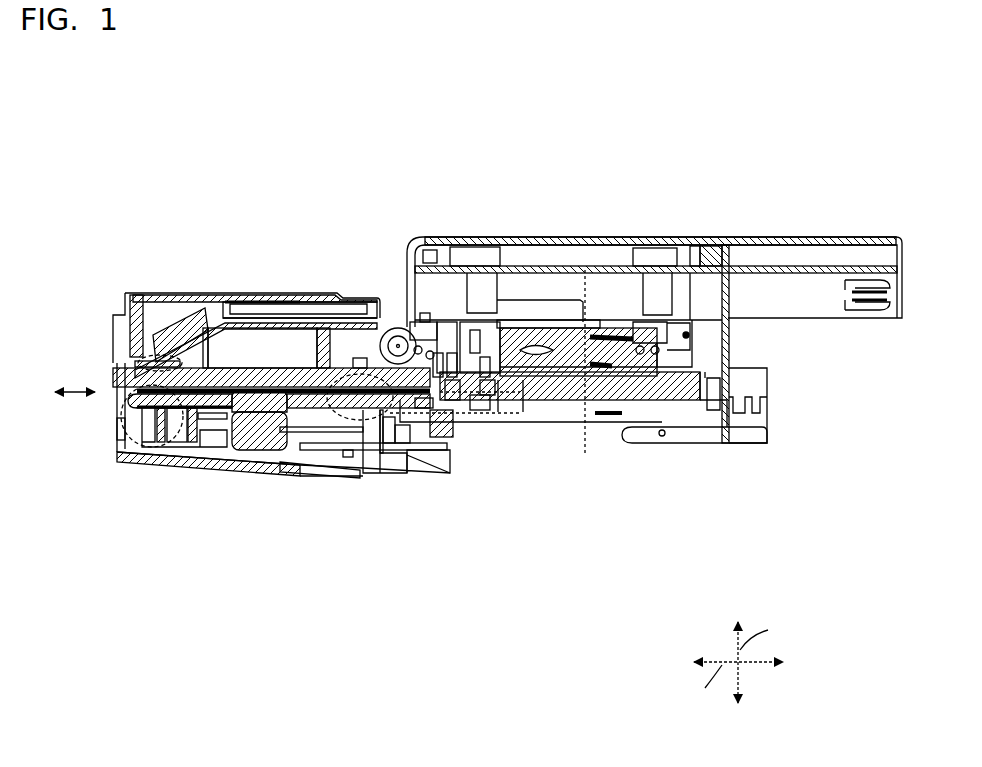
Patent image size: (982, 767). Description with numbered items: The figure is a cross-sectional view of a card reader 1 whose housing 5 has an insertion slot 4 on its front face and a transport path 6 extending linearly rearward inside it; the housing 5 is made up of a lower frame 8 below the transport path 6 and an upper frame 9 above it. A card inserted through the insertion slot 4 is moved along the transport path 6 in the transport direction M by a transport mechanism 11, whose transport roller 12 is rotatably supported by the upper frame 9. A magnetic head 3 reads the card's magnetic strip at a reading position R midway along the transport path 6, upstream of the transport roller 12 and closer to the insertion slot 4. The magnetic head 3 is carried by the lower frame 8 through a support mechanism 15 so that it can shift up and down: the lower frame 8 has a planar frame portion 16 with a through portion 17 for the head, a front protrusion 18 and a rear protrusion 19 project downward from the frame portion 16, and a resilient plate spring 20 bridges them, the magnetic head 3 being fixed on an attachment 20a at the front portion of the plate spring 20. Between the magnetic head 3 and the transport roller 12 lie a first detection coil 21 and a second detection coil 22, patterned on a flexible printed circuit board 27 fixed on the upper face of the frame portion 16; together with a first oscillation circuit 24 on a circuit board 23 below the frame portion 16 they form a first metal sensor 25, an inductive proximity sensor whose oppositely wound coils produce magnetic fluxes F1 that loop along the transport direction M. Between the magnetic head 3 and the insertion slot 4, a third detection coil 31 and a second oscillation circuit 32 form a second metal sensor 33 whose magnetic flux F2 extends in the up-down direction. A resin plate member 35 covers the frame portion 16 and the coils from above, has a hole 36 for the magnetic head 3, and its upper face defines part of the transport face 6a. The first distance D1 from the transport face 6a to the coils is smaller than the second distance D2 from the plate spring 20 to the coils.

The card reader 1 is at (733, 175).
The magnetic head 3 is at (236, 458).
The insertion slot 4 is at (121, 388).
The housing 5 is at (565, 236).
The transport path 6 is at (111, 392).
The transport face 6a is at (427, 402).
The lower frame 8 is at (578, 402).
The upper frame 9 is at (588, 237).
The transport mechanism 11 is at (422, 330).
The transport roller 12 is at (398, 346).
The support mechanism 15 is at (303, 433).
The frame portion 16 is at (423, 407).
The through portion 17 is at (255, 412).
The front protrusion 18 is at (185, 427).
The rear protrusion 19 is at (397, 410).
The plate spring 20 is at (325, 470).
The attachment 20a is at (300, 430).
The first detection coil 21 is at (312, 385).
The second detection coil 22 is at (378, 378).
The circuit board 23 is at (343, 440).
The first oscillation circuit 24 is at (370, 450).
The first metal sensor 25 is at (317, 376).
The flexible printed circuit board 27 is at (292, 377).
The third detection coil 31 is at (185, 365).
The second oscillation circuit 32 is at (386, 425).
The second metal sensor 33 is at (121, 427).
The plate member 35 is at (200, 345).
The hole 36 is at (225, 375).
The reading position R is at (256, 375).
The magnetic fluxes F1 is at (345, 372).
The magnetic flux F2 is at (133, 297).
The first distance D1 is at (548, 300).
The second distance D2 is at (503, 396).
The transport direction M is at (71, 369).